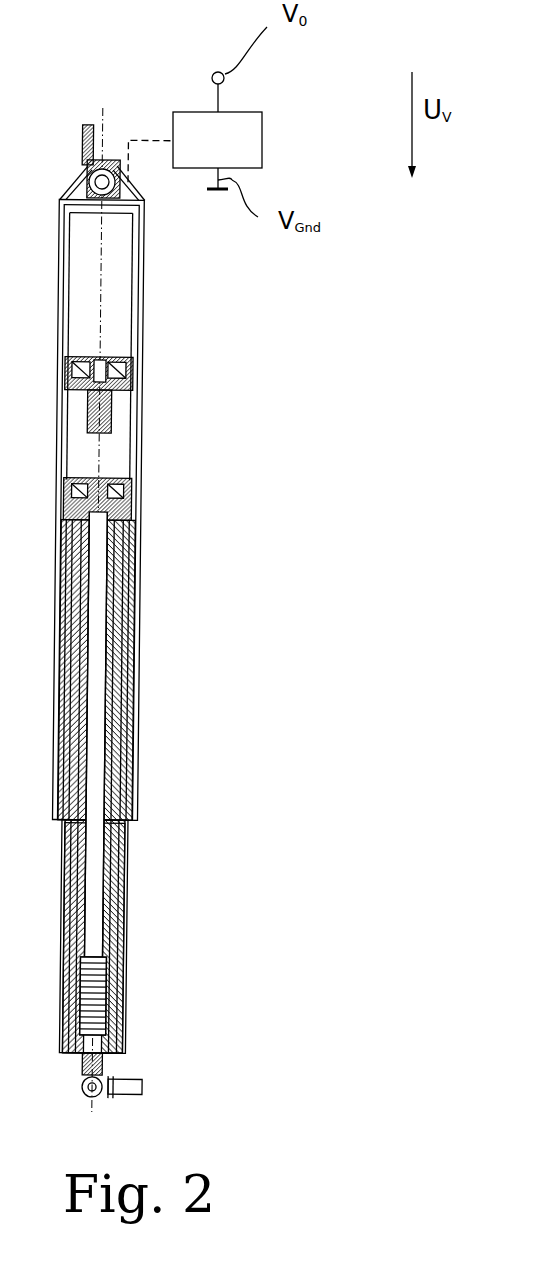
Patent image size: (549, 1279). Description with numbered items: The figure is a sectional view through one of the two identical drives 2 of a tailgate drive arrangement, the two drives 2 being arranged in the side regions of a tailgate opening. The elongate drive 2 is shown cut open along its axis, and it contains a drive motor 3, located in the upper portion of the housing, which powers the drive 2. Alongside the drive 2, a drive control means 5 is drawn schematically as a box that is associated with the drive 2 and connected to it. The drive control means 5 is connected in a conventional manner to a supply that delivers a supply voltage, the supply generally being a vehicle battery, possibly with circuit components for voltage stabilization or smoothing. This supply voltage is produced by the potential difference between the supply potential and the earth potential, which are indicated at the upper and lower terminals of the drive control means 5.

The drive 2 is at (253, 611).
The drive motor 3 is at (137, 347).
The drive control means 5 is at (243, 137).